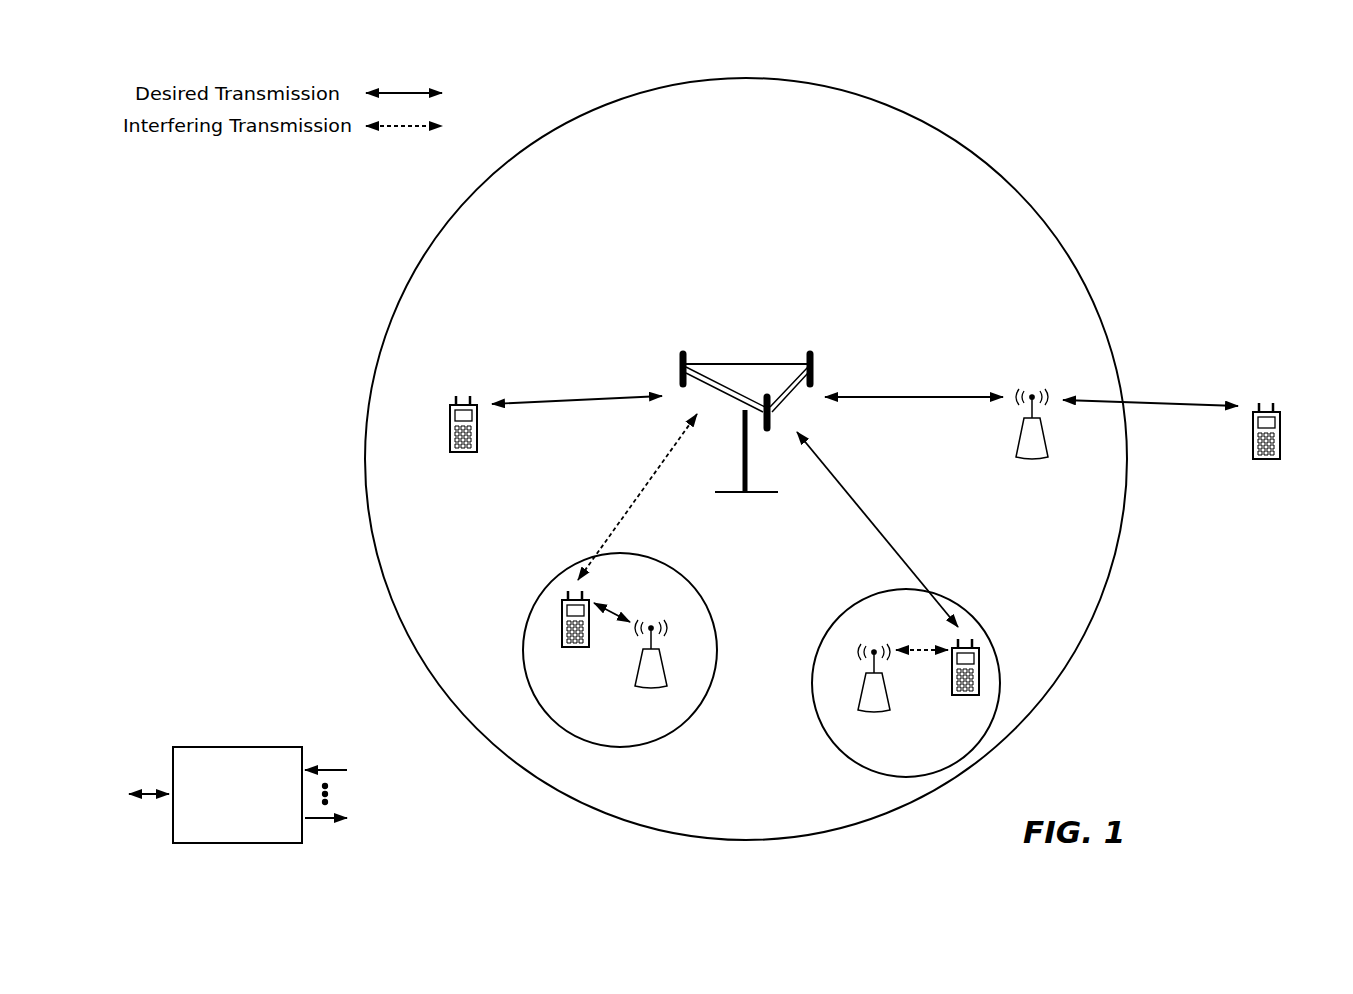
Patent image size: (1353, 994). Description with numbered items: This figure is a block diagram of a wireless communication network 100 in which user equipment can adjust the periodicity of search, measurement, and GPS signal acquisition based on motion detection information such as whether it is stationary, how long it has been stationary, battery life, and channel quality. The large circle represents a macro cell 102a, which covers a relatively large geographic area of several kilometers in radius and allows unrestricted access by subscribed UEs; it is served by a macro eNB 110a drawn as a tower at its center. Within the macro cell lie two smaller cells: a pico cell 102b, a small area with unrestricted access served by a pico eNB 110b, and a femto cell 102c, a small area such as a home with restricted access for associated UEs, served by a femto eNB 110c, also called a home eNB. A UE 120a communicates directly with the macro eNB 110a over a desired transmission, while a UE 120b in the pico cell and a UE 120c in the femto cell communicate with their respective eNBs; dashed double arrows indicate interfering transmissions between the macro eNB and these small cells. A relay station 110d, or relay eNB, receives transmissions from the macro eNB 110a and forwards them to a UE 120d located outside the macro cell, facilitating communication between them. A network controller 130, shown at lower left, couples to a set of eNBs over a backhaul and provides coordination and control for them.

The wireless communication network 100 is at (1197, 139).
The macro cell 102a is at (1010, 159).
The pico cell 102b is at (689, 585).
The femto cell 102c is at (835, 620).
The macro eNB 110a is at (744, 363).
The pico eNB 110b is at (664, 678).
The femto eNB 110c is at (860, 703).
The relay station 110d is at (1033, 391).
The UE 120a is at (451, 411).
The UE 120b is at (562, 645).
The UE 120c is at (952, 691).
The UE 120d is at (1281, 421).
The network controller 130 is at (236, 746).